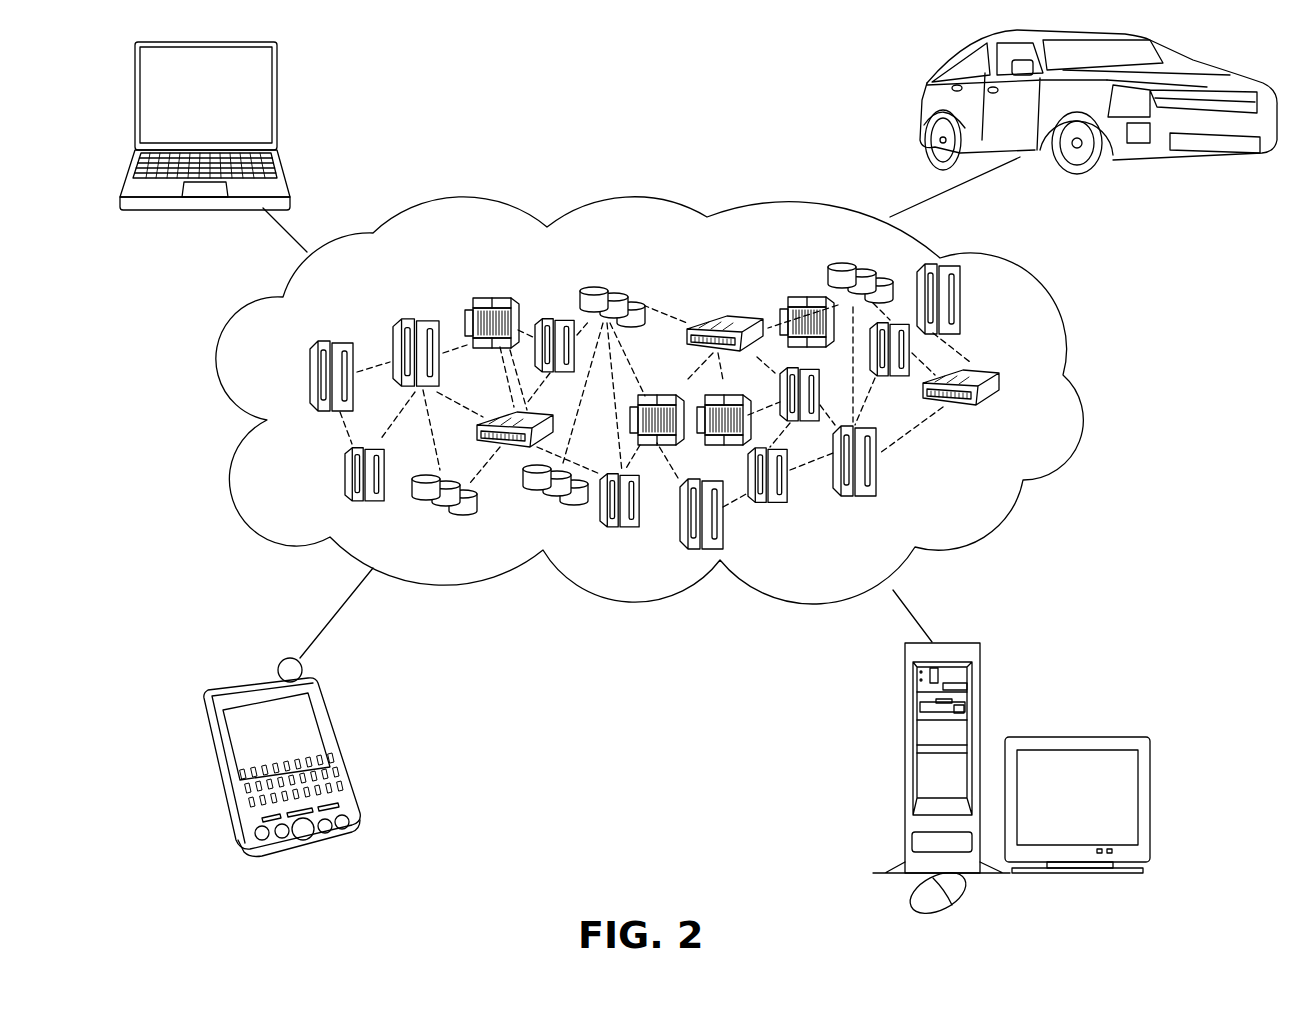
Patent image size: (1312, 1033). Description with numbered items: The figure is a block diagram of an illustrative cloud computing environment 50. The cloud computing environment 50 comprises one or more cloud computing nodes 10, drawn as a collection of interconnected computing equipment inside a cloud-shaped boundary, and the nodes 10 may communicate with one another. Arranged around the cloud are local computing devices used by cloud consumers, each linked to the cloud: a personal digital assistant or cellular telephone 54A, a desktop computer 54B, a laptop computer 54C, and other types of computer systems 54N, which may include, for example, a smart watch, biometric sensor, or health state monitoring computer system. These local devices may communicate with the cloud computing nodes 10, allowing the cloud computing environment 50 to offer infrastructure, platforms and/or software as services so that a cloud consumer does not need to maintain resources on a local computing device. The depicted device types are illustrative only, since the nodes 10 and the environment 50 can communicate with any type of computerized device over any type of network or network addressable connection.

The cloud computing environment 50 is at (1070, 387).
The cloud computing nodes 10 is at (983, 491).
The personal digital assistant (PDA) or cellular telephone 54A is at (330, 716).
The desktop computer 54B is at (902, 703).
The laptop computer 54C is at (277, 78).
The other type of computer systems 54N is at (927, 102).